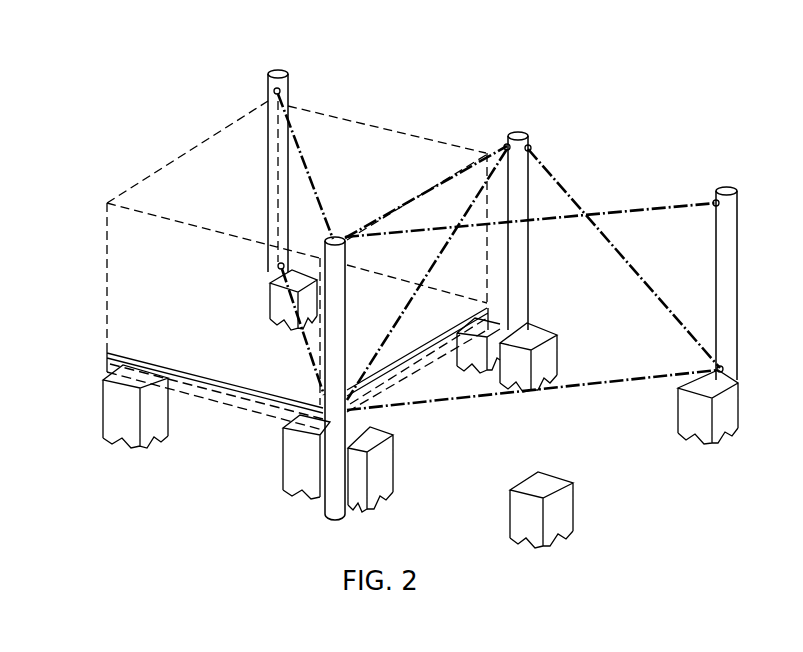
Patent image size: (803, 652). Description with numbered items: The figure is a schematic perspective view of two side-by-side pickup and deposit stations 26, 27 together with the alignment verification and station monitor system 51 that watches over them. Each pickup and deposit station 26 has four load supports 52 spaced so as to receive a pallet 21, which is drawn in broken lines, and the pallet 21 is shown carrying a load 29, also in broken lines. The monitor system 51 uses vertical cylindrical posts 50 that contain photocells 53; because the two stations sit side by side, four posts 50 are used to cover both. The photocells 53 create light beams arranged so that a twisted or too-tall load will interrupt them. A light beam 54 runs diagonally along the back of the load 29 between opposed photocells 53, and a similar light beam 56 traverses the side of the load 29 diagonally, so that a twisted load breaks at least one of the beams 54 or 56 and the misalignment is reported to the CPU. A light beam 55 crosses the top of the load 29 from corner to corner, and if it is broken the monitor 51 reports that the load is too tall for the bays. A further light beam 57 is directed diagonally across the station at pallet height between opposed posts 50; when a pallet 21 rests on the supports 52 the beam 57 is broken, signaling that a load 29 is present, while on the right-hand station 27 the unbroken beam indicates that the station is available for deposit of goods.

The pallet 21 is at (207, 405).
The pickup and deposit station 26 is at (247, 462).
The pickup and deposit station 27 is at (444, 506).
The load 29 is at (372, 120).
The vertical cylindrical post 50 is at (282, 73).
The alignment verification and pickup and delivery station monitor system 51 is at (521, 110).
The load support 52 is at (118, 415).
The photocell 53 is at (275, 91).
The light beam 54 is at (383, 213).
The light beam 55 is at (306, 172).
The light beam 56 is at (436, 273).
The light beam 57 is at (310, 350).